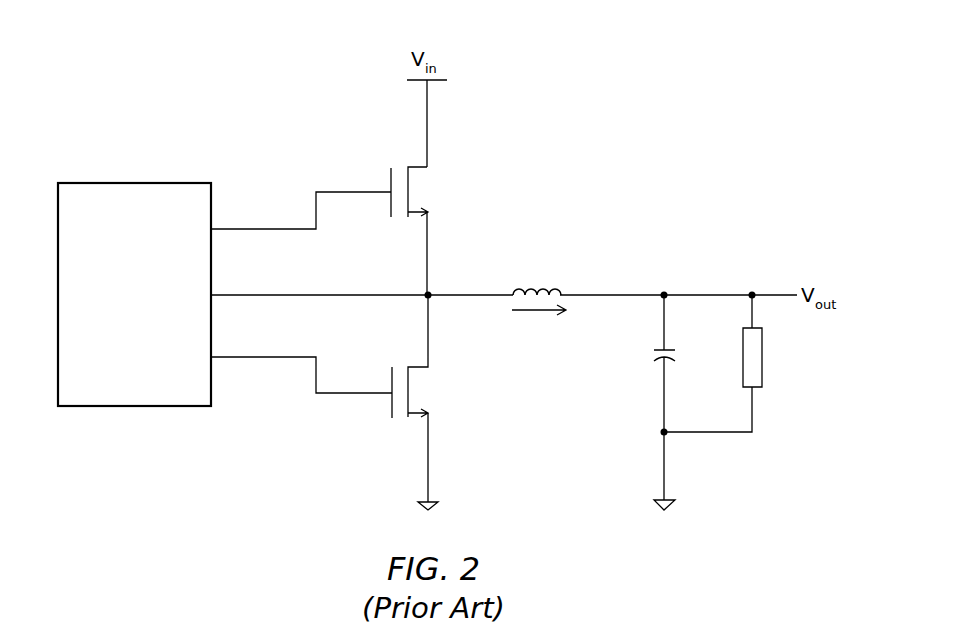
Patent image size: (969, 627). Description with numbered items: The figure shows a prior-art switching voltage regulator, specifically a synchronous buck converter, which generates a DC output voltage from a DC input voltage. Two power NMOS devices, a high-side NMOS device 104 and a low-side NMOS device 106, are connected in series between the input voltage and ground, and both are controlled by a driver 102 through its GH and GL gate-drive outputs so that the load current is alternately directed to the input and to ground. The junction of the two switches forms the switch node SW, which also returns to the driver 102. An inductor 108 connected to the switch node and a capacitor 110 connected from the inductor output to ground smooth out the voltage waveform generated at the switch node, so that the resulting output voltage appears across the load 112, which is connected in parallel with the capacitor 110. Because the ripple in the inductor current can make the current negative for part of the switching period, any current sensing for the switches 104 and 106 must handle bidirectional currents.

The driver 102 is at (130, 183).
The high-side NMOS device 104 is at (408, 173).
The low-side NMOS device 106 is at (408, 368).
The inductor 108 is at (542, 288).
The capacitor 110 is at (660, 353).
The load 112 is at (762, 384).